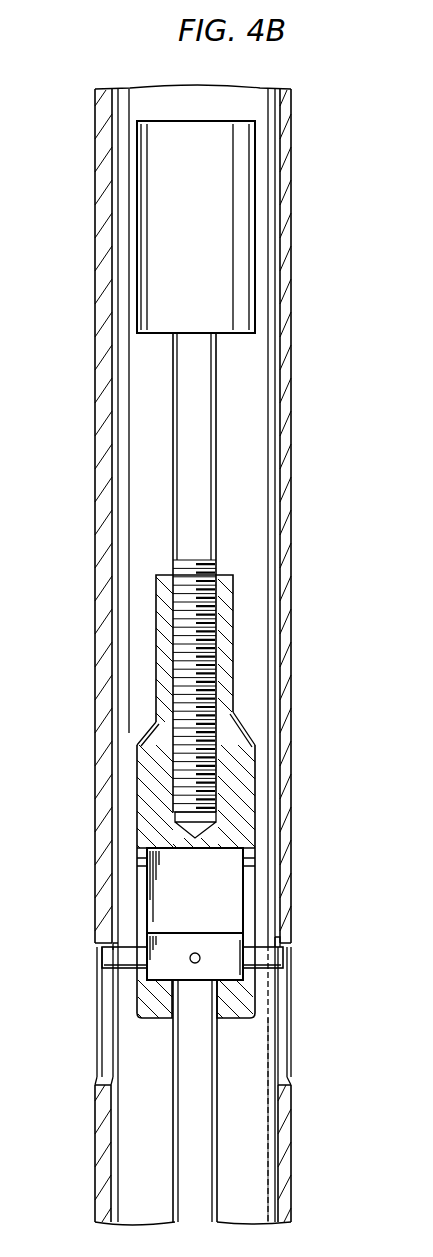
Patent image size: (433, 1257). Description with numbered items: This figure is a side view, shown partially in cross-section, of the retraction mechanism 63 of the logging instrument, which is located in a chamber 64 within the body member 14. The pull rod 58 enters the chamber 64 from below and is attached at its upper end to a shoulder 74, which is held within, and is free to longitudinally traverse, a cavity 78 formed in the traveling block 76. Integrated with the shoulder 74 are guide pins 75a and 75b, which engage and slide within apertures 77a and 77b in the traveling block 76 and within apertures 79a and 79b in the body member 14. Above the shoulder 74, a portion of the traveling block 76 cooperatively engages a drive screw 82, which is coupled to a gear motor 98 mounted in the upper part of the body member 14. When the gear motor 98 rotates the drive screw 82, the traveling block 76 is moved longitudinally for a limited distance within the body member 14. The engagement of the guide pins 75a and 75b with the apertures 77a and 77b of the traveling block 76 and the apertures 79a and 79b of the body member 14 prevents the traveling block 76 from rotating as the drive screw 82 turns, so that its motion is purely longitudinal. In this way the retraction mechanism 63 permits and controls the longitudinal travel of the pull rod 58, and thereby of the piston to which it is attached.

The body member 14 is at (291, 527).
The gear motor 98 is at (255, 243).
The drive screw 82 is at (216, 460).
The traveling block 76 is at (277, 750).
The retraction mechanism 63 is at (260, 792).
The cavity 78 is at (233, 875).
The shoulder 74 is at (228, 937).
The guide pin 75a is at (283, 968).
The guide pin 75b is at (105, 958).
The aperture 77a is at (280, 937).
The aperture 77b is at (142, 923).
The aperture 79a is at (280, 1035).
The aperture 79b is at (110, 1022).
The chamber 64 is at (253, 1108).
The pull rod 58 is at (213, 1170).